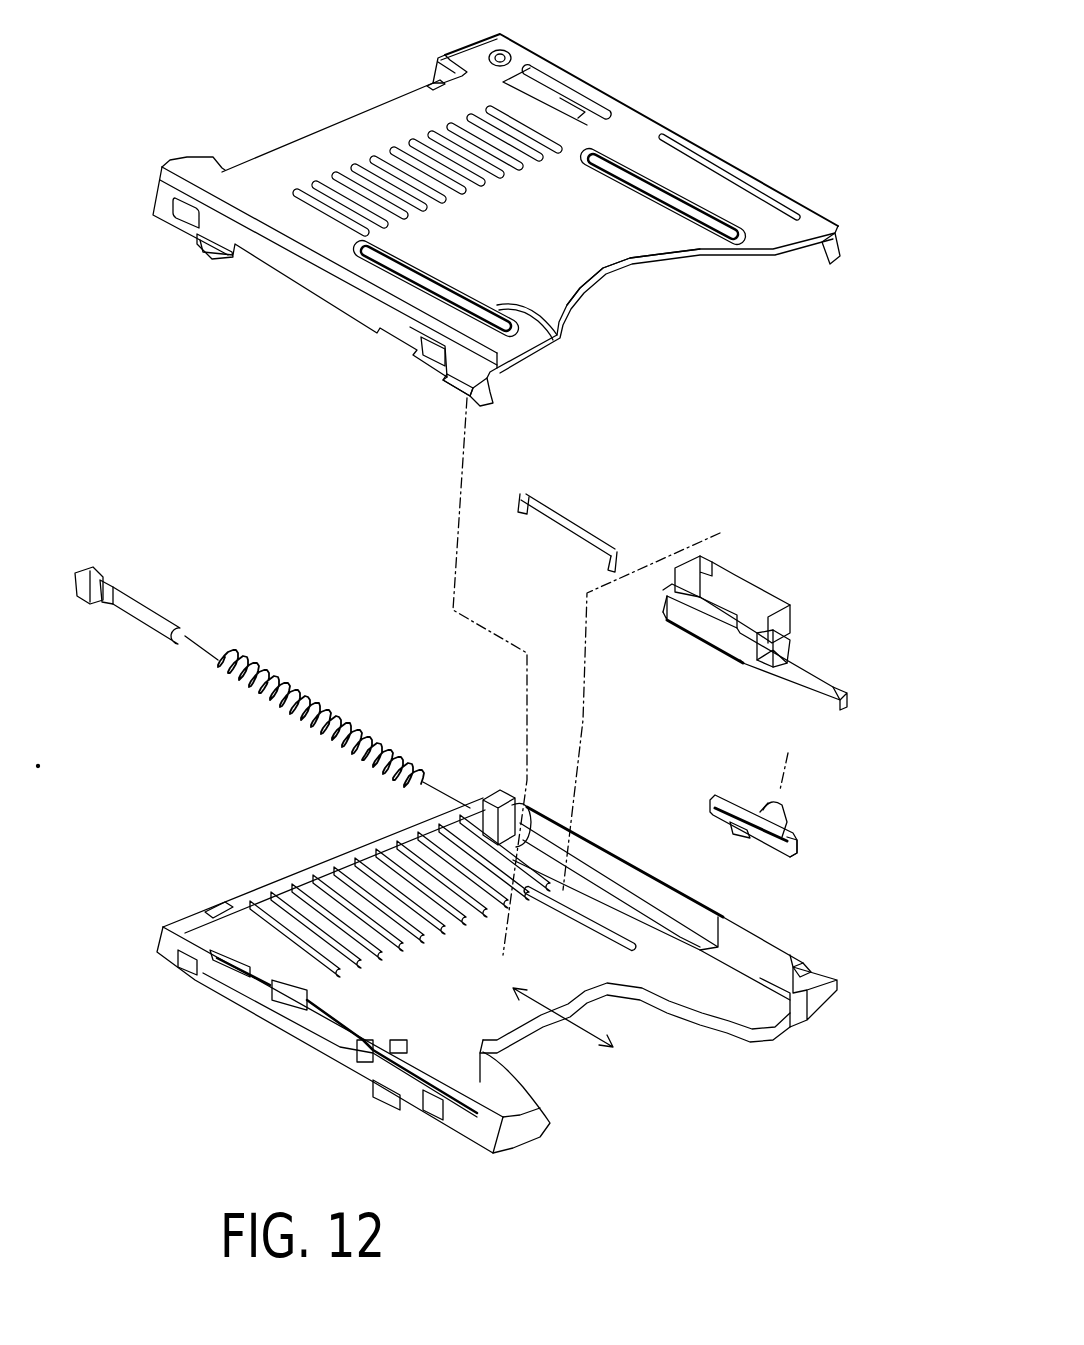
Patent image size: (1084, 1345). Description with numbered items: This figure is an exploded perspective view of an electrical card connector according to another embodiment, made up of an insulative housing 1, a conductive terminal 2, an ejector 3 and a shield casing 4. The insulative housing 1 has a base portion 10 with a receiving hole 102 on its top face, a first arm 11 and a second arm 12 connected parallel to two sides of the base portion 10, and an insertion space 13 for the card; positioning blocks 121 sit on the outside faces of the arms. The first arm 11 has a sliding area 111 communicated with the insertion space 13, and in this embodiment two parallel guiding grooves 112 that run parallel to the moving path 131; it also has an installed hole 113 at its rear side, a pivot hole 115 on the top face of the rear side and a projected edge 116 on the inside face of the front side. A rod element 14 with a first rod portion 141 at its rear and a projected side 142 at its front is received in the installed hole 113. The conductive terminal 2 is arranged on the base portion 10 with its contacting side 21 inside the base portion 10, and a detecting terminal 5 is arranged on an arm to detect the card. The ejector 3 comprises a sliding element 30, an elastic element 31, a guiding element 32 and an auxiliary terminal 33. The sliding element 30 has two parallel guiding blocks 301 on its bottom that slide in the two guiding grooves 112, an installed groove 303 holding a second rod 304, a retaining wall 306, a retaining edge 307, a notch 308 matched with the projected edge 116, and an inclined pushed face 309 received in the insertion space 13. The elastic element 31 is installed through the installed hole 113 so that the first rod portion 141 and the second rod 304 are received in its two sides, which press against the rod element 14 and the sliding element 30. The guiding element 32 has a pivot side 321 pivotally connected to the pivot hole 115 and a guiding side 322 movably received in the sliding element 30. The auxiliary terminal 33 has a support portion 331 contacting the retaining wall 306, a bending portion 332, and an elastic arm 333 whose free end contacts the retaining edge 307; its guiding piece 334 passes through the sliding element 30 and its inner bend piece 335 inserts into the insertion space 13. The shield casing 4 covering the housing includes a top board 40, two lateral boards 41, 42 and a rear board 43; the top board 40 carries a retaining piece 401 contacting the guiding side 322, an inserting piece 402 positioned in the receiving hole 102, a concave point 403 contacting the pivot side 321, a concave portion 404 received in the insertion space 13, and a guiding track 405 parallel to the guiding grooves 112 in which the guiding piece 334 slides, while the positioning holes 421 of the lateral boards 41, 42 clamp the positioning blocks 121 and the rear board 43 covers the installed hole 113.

The insulative housing 1 is at (305, 1062).
The base portion 10 is at (274, 892).
The receiving hole 102 is at (207, 913).
The first arm 11 is at (822, 1010).
The sliding area 111 is at (663, 950).
The guiding groove 112 is at (580, 913).
The installed hole 113 is at (527, 806).
The pivot hole 115 is at (497, 800).
The projected edge 116 is at (793, 973).
The second arm 12 is at (507, 1130).
The positioning block 121 is at (183, 957).
The insertion space 13 is at (550, 1040).
The moving path 131 is at (543, 1013).
The rod element 14 is at (103, 570).
The first rod portion 141 is at (140, 607).
The projected side 142 is at (80, 607).
The conductive terminal 2 is at (324, 885).
The contacting side 21 is at (347, 977).
The ejector 3 is at (338, 407).
The sliding element 30 is at (729, 710).
The guiding block 301 is at (748, 582).
The installed groove 303 is at (670, 610).
The second rod 304 is at (723, 663).
The retaining wall 306 is at (807, 680).
The retaining edge 307 is at (787, 634).
The notch 308 is at (827, 713).
The pushed face 309 is at (793, 641).
The elastic element 31 is at (302, 687).
The guiding element 32 is at (517, 522).
The pivot side 321 is at (520, 500).
The guiding side 322 is at (623, 547).
The auxiliary terminal 33 is at (710, 803).
The support portion 331 is at (757, 813).
The bending portion 332 is at (787, 857).
The elastic arm 333 is at (713, 813).
The guiding piece 334 is at (793, 820).
The inner bend piece 335 is at (732, 823).
The shield casing 4 is at (710, 114).
The top board 40 is at (597, 257).
The retaining piece 401 is at (557, 100).
The inserting piece 402 is at (432, 77).
The concave point 403 is at (503, 55).
The concave portion 404 is at (560, 330).
The guiding track 405 is at (757, 187).
The lateral board 41 is at (834, 267).
The lateral board 42 is at (493, 390).
The positioning hole 421 is at (181, 213).
The rear board 43 is at (427, 70).
The detecting terminal 5 is at (323, 1015).